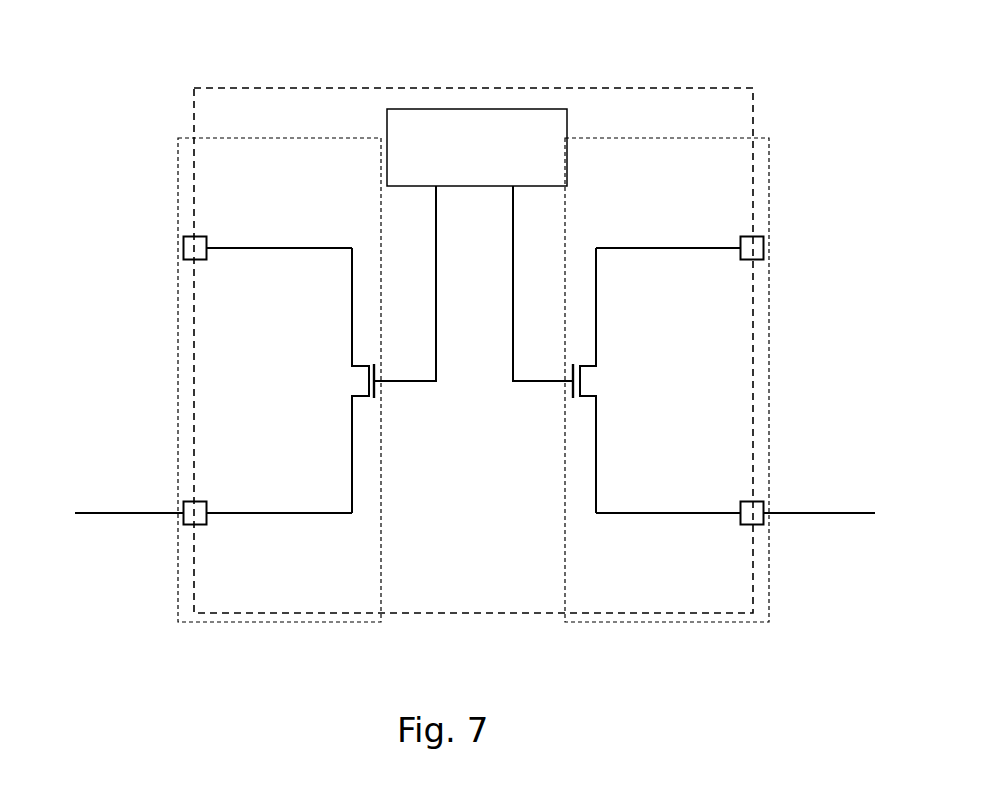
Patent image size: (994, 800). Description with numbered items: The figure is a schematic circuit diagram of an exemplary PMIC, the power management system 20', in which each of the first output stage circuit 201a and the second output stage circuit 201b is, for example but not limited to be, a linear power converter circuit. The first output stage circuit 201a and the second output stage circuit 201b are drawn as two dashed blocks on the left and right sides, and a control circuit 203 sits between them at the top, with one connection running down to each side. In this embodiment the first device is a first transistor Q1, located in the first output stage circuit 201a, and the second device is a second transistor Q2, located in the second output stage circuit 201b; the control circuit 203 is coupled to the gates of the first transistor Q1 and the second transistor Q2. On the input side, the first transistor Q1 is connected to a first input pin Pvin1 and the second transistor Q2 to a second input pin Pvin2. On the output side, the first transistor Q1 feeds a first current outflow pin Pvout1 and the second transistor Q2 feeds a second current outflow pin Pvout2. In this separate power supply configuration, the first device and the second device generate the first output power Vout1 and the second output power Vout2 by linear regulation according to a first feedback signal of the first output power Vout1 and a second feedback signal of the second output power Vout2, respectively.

The power management system 20' is at (473, 333).
The first output stage circuit 201a is at (187, 137).
The second output stage circuit 201b is at (650, 137).
The control circuit 203 is at (456, 177).
The first transistor Q1 is at (378, 349).
The second transistor Q2 is at (572, 349).
The first input pin Pvin1 is at (239, 249).
The second input pin Pvin2 is at (710, 249).
The first current outflow pin Pvout1 is at (268, 500).
The second current outflow pin Pvout2 is at (680, 500).
The first output power Vout1 is at (100, 516).
The second output power Vout2 is at (849, 516).